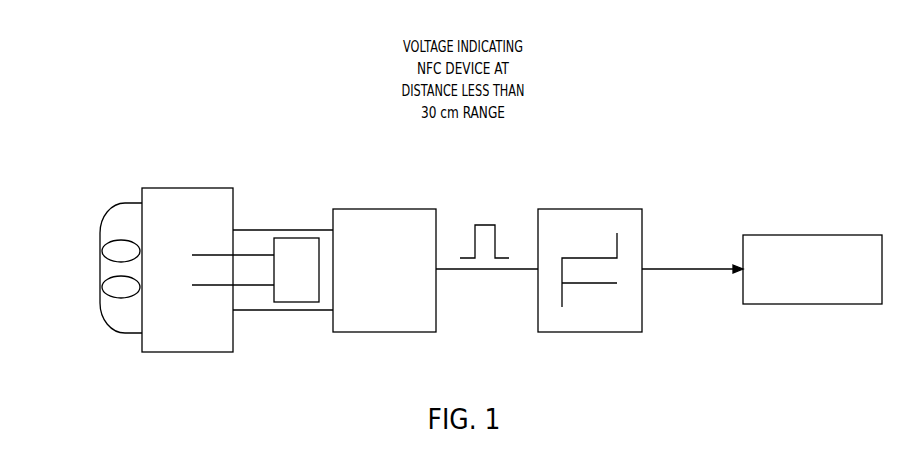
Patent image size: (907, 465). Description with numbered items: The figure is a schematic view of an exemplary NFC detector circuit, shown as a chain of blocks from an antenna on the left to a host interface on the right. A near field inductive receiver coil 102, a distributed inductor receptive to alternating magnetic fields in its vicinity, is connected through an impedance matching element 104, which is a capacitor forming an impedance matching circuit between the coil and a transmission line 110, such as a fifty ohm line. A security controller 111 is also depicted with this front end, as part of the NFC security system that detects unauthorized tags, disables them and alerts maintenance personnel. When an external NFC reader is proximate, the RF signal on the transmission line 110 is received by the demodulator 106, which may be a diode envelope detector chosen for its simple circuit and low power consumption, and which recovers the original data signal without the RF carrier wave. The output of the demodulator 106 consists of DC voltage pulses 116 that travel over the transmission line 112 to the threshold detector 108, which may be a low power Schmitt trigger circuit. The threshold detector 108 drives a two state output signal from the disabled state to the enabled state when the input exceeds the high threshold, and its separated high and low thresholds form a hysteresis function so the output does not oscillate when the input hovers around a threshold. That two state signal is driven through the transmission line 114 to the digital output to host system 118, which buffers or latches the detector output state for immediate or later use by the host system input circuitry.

The inductive receiver coil 102 is at (99, 270).
The impedance matching element 104 is at (206, 253).
The transmission line 110 is at (283, 228).
The security controller 111 is at (297, 304).
The demodulator 106 is at (395, 208).
The transmission line 112 is at (483, 273).
The DC voltage pulses 116 is at (484, 223).
The threshold detector 108 is at (622, 208).
The transmission line 114 is at (707, 268).
The digital output to host system 118 is at (847, 234).